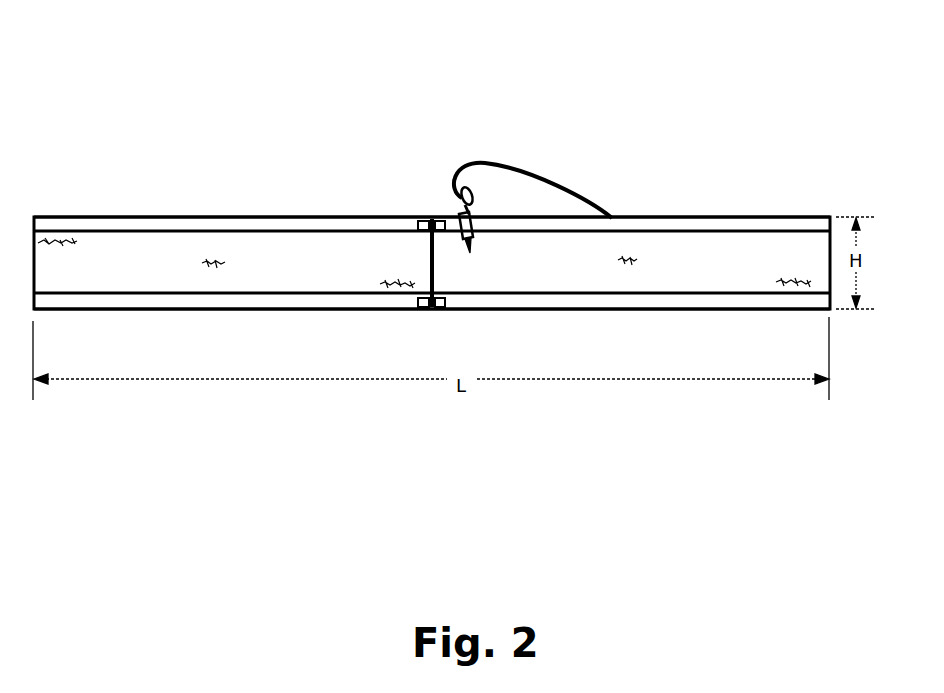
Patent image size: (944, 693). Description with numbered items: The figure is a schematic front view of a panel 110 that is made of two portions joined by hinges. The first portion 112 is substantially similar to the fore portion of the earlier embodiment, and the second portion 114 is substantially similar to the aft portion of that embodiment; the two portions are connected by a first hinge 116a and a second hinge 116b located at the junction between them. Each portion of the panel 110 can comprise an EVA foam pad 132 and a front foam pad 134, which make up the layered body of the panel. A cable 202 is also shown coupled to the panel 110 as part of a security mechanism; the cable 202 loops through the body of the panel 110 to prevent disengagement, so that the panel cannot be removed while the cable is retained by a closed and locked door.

The panel 110 is at (523, 428).
The first portion 112 is at (162, 222).
The second portion 114 is at (750, 300).
The first hinge 116a is at (418, 225).
The second hinge 116b is at (418, 301).
The EVA foam pad 132 is at (62, 222).
The front foam pad 134 is at (218, 243).
The cable 202 is at (474, 160).